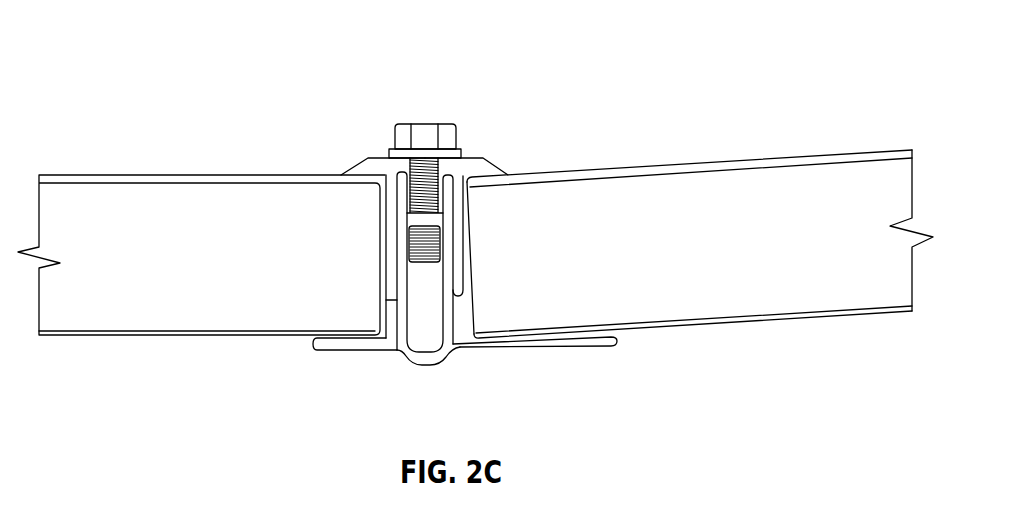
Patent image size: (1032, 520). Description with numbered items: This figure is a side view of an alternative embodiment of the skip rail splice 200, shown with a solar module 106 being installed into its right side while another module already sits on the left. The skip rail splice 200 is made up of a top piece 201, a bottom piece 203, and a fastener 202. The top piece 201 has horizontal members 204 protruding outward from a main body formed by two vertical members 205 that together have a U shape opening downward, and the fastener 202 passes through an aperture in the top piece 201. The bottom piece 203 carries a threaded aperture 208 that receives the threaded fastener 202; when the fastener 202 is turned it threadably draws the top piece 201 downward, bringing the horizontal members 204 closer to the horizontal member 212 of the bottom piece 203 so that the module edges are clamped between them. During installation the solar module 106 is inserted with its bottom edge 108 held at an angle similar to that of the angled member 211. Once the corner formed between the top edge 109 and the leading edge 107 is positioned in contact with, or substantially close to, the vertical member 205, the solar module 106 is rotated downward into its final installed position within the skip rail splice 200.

The skip rail splice 200 is at (758, 38).
The solar module 106 is at (762, 192).
The leading edge 107 is at (477, 280).
The bottom edge 108 is at (826, 318).
The top edge 109 is at (607, 167).
The top piece 201 is at (352, 158).
The fastener 202 is at (443, 122).
The bottom piece 203 is at (403, 223).
The horizontal members 204 is at (500, 166).
The vertical members 205 is at (460, 292).
The threaded aperture 208 is at (422, 215).
The angled member 211 is at (467, 350).
The horizontal member 212 is at (563, 347).